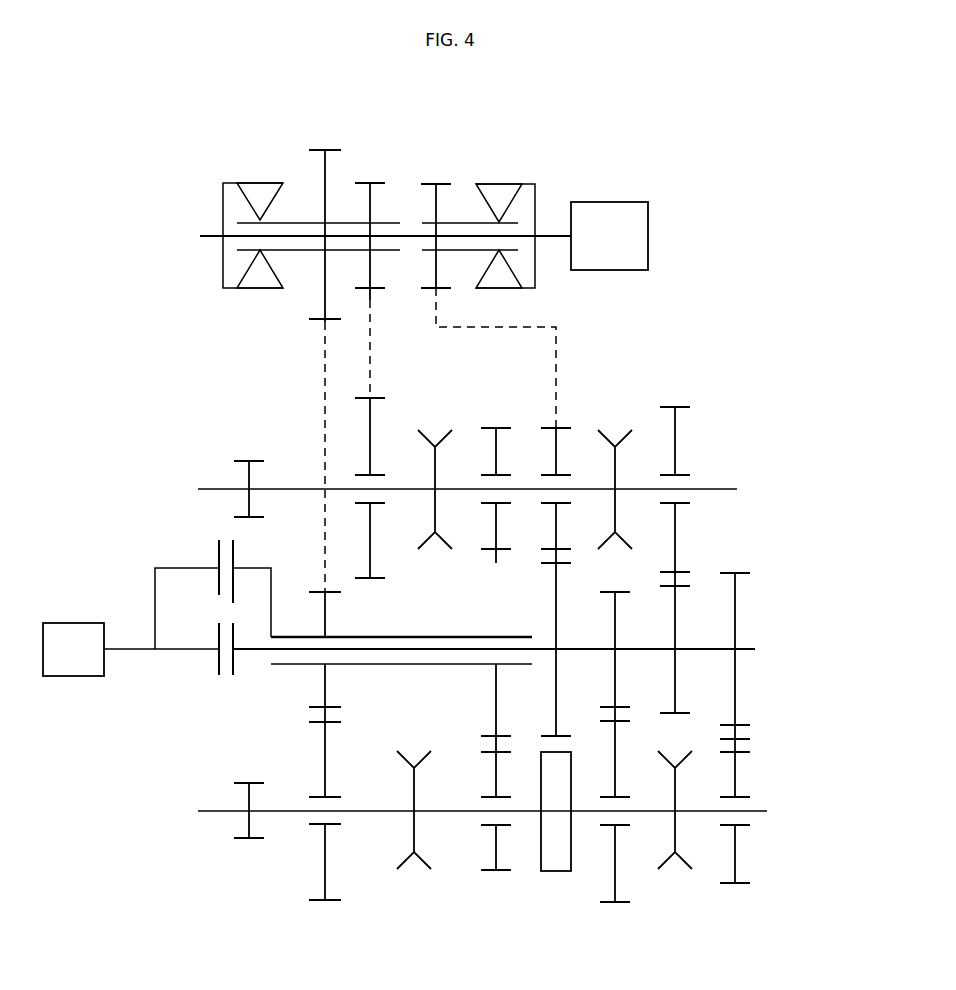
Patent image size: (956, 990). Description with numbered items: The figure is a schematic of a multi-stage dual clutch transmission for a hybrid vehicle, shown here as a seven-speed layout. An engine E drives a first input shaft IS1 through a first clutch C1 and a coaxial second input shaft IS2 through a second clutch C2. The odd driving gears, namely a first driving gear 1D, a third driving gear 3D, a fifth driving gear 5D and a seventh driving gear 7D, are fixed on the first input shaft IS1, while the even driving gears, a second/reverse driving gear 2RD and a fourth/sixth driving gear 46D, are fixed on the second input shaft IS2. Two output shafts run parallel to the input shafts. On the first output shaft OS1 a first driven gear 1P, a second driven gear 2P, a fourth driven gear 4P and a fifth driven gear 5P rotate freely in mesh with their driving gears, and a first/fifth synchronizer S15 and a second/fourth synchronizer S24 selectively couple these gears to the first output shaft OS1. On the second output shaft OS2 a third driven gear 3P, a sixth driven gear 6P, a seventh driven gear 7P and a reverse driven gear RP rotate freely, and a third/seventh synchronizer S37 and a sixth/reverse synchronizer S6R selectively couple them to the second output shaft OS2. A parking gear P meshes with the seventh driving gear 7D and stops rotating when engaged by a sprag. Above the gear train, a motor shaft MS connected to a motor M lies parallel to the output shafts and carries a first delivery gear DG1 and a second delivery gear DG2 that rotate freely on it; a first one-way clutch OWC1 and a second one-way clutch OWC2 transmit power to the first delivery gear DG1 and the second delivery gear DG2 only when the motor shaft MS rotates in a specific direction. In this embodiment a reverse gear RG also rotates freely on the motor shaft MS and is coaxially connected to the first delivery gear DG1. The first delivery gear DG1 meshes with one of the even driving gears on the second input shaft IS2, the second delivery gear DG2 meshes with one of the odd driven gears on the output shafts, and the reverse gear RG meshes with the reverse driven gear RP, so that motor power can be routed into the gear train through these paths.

The motor shaft MS is at (408, 233).
The first one-way clutch OWC1 is at (258, 187).
The first delivery gear DG1 is at (318, 150).
The reverse gear RG is at (375, 182).
The second delivery gear DG2 is at (447, 178).
The second one-way clutch OWC2 is at (502, 192).
The motor M is at (609, 236).
The second output shaft OS2 is at (212, 488).
The reverse driven gear RP is at (382, 397).
The sixth/reverse synchronizer S6R is at (432, 438).
The sixth driven gear 6P is at (496, 485).
The seventh driven gear 7P is at (548, 422).
The third/seventh synchronizer S37 is at (608, 440).
The third driven gear 3P is at (675, 477).
The third driving gear 3D is at (676, 678).
The seventh driving gear 7D is at (557, 585).
The first driving gear 1D is at (615, 614).
The fifth driving gear 5D is at (737, 705).
The first input shaft IS1 is at (757, 649).
The engine E is at (131, 649).
The second clutch C2 is at (219, 552).
The first clutch C1 is at (219, 663).
The second input shaft IS2 is at (282, 665).
The second/reverse driving gear 2RD is at (323, 683).
The fourth/sixth driving gear 46D is at (496, 685).
The first output shaft OS1 is at (218, 811).
The second driven gear 2P is at (313, 900).
The second/fourth synchronizer S24 is at (420, 868).
The fourth driven gear 4P is at (485, 870).
The parking gear P is at (565, 871).
The first driven gear 1P is at (615, 823).
The first/fifth synchronizer S15 is at (667, 868).
The fifth driven gear 5P is at (735, 822).